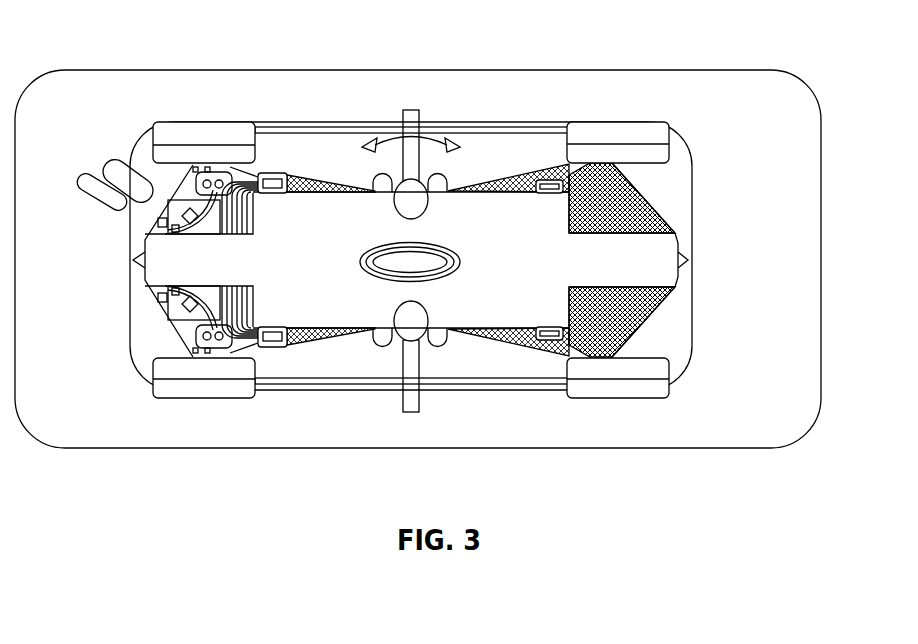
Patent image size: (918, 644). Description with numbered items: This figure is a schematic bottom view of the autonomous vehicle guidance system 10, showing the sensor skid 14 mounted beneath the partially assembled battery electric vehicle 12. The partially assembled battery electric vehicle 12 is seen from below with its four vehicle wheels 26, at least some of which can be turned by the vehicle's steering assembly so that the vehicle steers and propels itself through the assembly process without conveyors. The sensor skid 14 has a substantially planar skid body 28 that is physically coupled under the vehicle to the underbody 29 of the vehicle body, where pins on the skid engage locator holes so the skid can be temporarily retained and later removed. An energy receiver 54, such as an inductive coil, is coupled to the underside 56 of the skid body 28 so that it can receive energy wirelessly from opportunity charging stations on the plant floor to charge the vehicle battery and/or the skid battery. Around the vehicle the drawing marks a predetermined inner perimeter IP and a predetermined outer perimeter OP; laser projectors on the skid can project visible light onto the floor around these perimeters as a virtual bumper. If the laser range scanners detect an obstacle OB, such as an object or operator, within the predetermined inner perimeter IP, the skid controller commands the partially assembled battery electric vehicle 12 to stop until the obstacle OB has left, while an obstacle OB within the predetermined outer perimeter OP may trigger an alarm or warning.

The autonomous vehicle guidance system 10 is at (721, 54).
The predetermined outer perimeter OP is at (802, 86).
The predetermined inner perimeter IP is at (692, 233).
The obstacle OB is at (112, 161).
The partially assembled battery electric vehicle 12 is at (652, 198).
The sensor skid 14 is at (325, 186).
The vehicle wheels 26 is at (205, 135).
The skid body 28 is at (353, 303).
The underbody 29 is at (652, 322).
The energy receiver 54 is at (463, 262).
The underside 56 is at (498, 213).